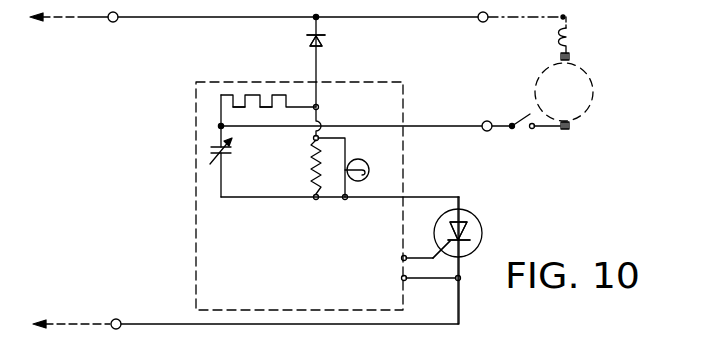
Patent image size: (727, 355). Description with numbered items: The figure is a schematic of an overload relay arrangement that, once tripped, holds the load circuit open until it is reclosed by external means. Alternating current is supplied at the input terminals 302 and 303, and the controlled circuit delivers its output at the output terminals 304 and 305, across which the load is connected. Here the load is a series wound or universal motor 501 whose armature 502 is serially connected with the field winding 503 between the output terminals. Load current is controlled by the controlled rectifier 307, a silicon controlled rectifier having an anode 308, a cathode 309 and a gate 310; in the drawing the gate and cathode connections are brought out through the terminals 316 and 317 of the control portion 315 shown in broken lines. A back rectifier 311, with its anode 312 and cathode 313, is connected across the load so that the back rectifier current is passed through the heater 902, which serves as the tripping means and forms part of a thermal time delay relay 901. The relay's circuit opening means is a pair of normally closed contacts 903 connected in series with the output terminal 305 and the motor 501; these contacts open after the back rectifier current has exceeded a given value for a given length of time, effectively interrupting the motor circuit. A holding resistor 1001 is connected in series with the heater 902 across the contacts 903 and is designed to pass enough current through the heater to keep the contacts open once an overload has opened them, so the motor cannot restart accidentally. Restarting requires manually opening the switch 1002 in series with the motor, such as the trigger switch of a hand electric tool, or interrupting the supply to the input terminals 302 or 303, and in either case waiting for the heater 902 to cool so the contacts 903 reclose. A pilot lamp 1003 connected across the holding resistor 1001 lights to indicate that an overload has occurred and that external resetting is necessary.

The input terminal 302 is at (117, 21).
The input terminal 303 is at (118, 319).
The output terminal 304 is at (481, 22).
The output terminal 305 is at (483, 122).
The controlled rectifier 307 is at (487, 237).
The anode 308 is at (477, 216).
The cathode 309 is at (470, 242).
The gate 310 is at (434, 237).
The back rectifier 311 is at (300, 42).
The anode 312 is at (321, 43).
The cathode 313 is at (324, 35).
The trigger circuit 315 is at (376, 108).
The gate terminal 316 is at (404, 262).
The cathode terminal 317 is at (422, 281).
The motor 501 is at (592, 78).
The armature 502 is at (593, 89).
The field winding 503 is at (571, 38).
The thermal time delay relay 901 is at (287, 110).
The heater 902 is at (250, 95).
The normally closed contacts 903 is at (212, 148).
The holding resistor 1001 is at (310, 160).
The switch 1002 is at (523, 130).
The pilot lamp 1003 is at (370, 180).